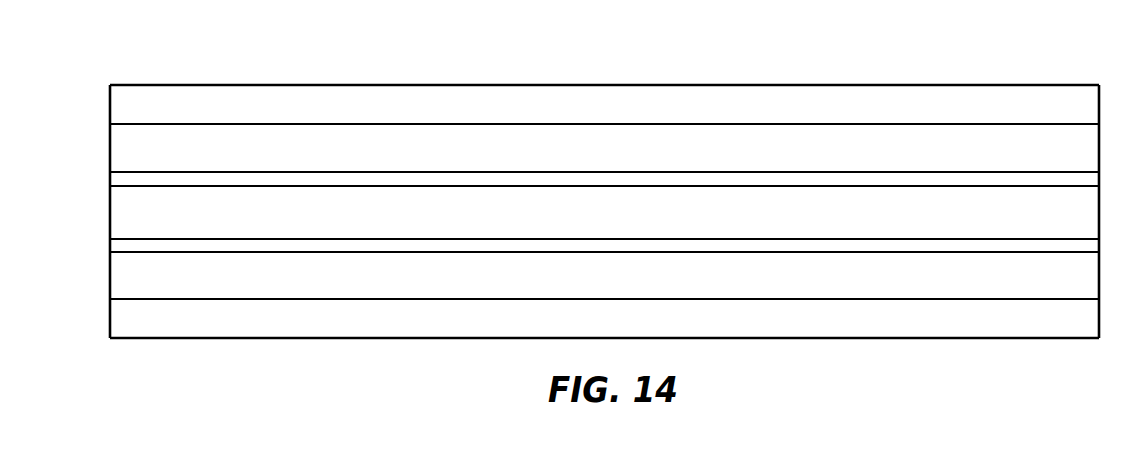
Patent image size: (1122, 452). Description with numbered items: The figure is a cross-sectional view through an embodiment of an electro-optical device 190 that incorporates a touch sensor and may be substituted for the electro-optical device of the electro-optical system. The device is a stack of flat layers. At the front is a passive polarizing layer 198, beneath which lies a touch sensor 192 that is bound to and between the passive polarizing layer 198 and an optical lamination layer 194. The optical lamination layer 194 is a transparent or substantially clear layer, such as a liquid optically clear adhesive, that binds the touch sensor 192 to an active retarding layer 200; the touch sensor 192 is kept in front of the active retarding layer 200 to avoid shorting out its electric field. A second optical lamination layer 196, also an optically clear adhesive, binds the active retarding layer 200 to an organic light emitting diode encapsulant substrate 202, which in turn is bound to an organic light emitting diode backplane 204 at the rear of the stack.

The electro-optical device 190 is at (769, 70).
The passive polarizing layer 198 is at (120, 105).
The touch sensor 192 is at (120, 150).
The optical lamination layer 194 is at (120, 180).
The active retarding layer 200 is at (120, 214).
The optical lamination layer 196 is at (120, 244).
The organic light emitting diode encapsulant substrate 202 is at (120, 282).
The organic light emitting diode backplane 204 is at (120, 327).